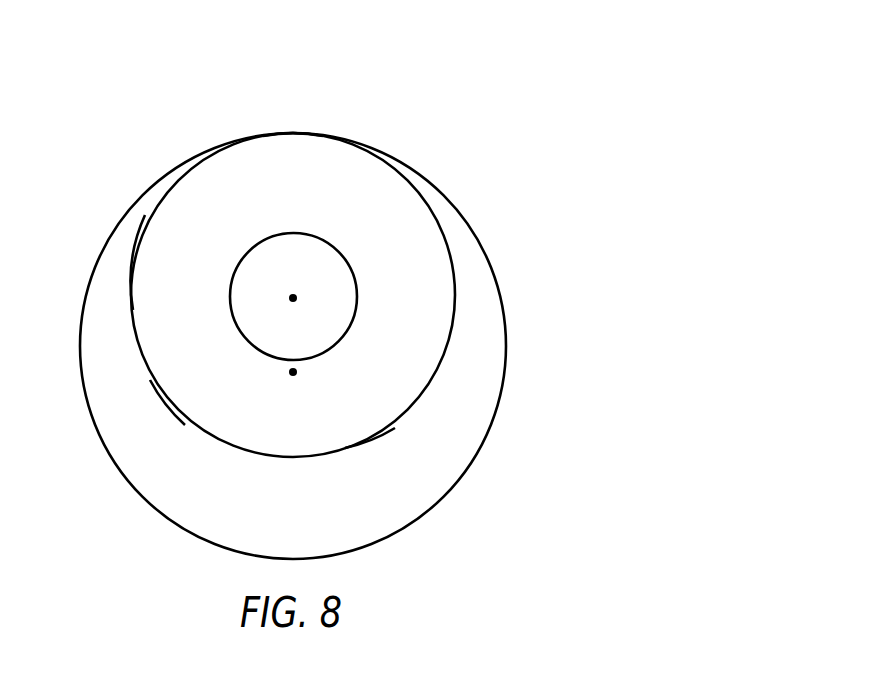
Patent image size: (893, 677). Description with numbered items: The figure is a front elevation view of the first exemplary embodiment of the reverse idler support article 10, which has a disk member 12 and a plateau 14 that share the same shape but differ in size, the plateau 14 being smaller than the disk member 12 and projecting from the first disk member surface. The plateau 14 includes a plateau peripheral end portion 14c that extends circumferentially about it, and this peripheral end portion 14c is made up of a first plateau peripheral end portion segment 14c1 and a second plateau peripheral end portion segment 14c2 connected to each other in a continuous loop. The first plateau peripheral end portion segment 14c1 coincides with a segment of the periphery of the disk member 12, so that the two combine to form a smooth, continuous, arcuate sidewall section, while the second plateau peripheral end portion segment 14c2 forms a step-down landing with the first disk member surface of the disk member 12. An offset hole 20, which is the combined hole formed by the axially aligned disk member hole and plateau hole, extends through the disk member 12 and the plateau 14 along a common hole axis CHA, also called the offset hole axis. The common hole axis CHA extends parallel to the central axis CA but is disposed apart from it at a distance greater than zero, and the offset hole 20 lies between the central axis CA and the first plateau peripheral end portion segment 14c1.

The reverse idler support article 10 is at (483, 163).
The disk member 12 is at (448, 432).
The plateau 14 is at (420, 245).
The plateau peripheral end portion 14c is at (142, 242).
The first plateau peripheral end portion segment 14c1 is at (290, 133).
The second plateau peripheral end portion segment 14c2 is at (370, 442).
The offset hole 20 is at (304, 340).
The common hole axis CHA is at (316, 285).
The central axis CA is at (296, 371).